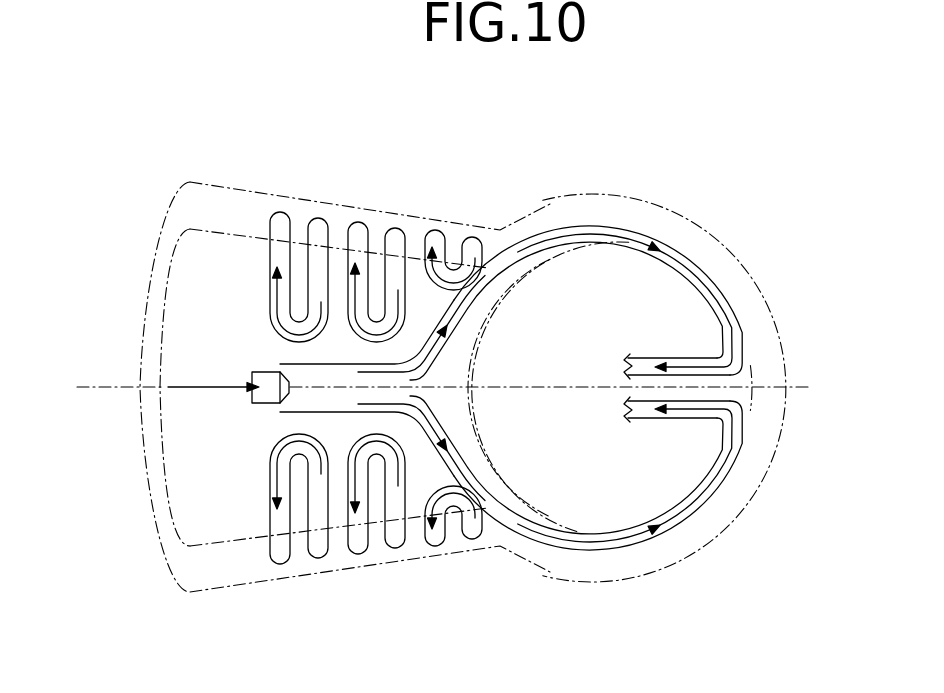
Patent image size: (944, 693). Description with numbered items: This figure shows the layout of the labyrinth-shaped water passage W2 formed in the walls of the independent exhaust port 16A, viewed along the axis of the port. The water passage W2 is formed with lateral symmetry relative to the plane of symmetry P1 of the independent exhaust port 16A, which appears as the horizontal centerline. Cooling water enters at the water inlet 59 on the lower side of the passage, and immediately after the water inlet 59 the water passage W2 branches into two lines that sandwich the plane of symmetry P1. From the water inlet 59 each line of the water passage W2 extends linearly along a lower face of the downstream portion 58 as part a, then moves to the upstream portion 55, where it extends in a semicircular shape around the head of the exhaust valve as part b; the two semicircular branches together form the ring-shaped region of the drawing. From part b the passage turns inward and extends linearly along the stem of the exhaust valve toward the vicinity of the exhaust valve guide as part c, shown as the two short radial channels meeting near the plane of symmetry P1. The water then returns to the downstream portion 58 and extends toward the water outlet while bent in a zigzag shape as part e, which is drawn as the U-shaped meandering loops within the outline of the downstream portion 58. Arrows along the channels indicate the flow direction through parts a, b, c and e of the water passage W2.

The independent exhaust port 16A is at (484, 378).
The downstream portion 58 is at (333, 205).
The water inlet 59 is at (260, 404).
The upstream portion 55 is at (744, 266).
The water passage W2 is at (608, 216).
The plane of symmetry P1 is at (98, 387).
The part a is at (345, 364).
The part b is at (676, 247).
The part c is at (650, 360).
The part e is at (362, 240).